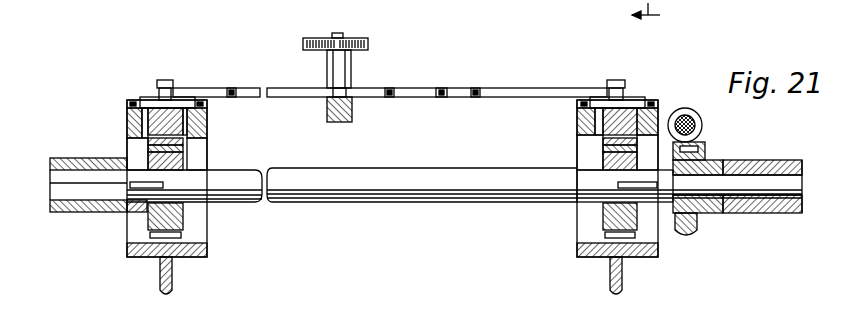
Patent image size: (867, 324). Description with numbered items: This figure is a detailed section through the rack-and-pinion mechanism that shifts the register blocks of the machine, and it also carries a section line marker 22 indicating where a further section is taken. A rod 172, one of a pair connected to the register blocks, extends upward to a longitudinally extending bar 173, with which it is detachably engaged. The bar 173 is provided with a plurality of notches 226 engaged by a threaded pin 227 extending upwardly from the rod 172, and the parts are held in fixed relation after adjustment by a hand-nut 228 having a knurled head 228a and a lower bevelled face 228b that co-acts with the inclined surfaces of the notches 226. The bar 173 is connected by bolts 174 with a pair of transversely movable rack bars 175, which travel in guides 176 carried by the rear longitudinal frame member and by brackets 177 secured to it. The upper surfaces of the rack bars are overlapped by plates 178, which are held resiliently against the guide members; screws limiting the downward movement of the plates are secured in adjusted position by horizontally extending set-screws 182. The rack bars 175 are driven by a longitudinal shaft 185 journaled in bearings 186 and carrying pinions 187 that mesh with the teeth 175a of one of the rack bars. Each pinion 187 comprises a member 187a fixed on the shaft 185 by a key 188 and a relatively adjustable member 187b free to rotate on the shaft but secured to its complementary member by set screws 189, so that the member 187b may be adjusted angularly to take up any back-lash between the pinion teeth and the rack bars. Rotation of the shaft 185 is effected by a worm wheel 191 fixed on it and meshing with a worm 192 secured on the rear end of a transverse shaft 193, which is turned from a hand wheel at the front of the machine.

The section line 22- 22 is at (646, 20).
The rod 172 is at (330, 122).
The longitudinally extending bar 173 is at (505, 88).
The bolt 174 is at (165, 80).
The rack bar 175 is at (168, 108).
The teeth of rack bar 175a is at (185, 137).
The guide 176 is at (128, 125).
The bracket 177 is at (140, 258).
The plate 178 is at (141, 103).
The set-screw 182 is at (130, 103).
The longitudinal shaft 185 is at (473, 169).
The bearing 186 is at (66, 153).
The pinion 187 is at (183, 228).
The pinion member 187a is at (150, 229).
The adjustable pinion member 187b is at (183, 216).
The key 188 is at (125, 212).
The set screw 189 is at (130, 148).
The worm wheel 191 is at (692, 238).
The worm 192 is at (703, 125).
The transverse shaft 193 is at (700, 108).
The notch 226 is at (233, 89).
The threaded pin 227 is at (341, 33).
The hand-nut 228 is at (352, 68).
The knurled head 228a is at (368, 45).
The lower bevelled face 228b is at (346, 92).